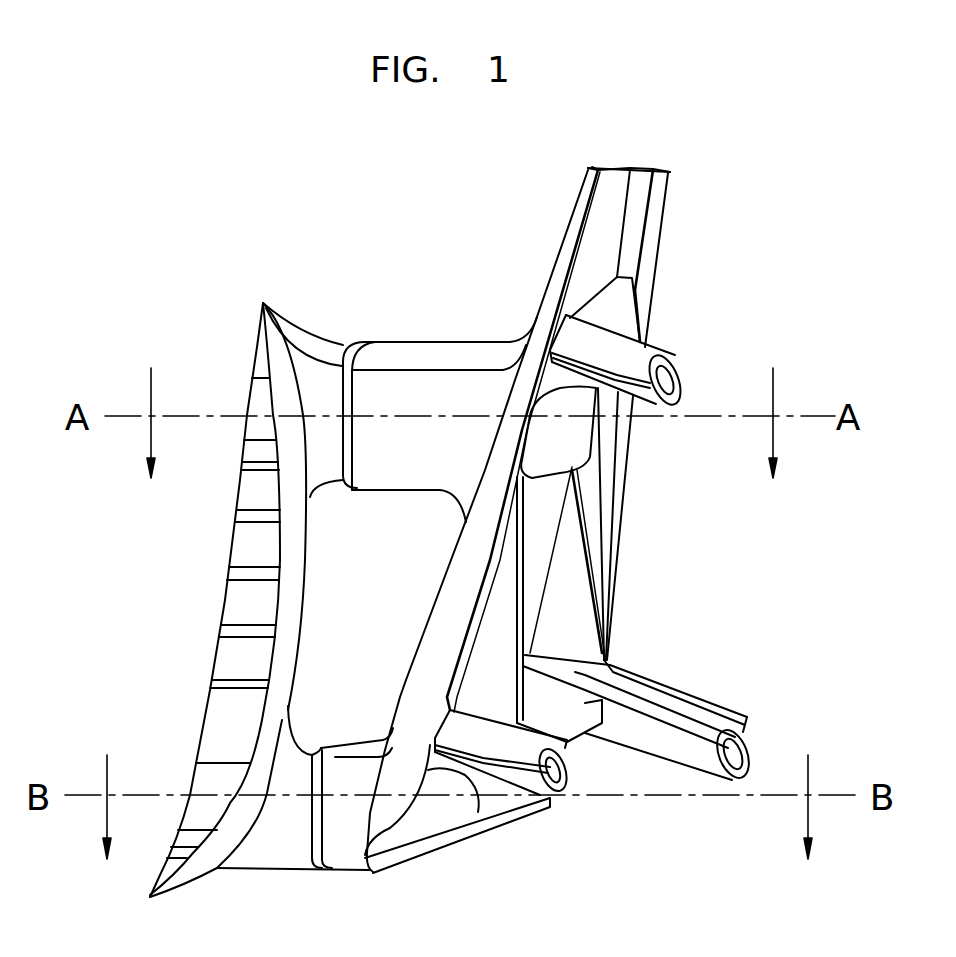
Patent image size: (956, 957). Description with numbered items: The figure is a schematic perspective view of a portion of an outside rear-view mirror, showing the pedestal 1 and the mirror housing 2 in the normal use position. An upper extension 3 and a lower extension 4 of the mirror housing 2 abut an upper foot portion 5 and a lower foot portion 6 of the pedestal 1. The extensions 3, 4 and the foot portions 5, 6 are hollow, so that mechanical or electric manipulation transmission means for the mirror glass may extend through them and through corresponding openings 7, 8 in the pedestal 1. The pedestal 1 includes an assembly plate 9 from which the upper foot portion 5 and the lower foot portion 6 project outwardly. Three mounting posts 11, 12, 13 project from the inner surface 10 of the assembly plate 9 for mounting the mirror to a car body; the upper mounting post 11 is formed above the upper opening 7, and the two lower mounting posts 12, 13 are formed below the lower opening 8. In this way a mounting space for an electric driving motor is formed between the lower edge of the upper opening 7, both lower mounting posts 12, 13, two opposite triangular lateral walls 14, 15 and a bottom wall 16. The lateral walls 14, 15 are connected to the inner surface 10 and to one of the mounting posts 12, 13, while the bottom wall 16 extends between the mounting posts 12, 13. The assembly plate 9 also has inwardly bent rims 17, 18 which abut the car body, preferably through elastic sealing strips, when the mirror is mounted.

The pedestal 1 is at (578, 171).
The mirror housing 2 is at (259, 294).
The upper extension 3 is at (312, 332).
The lower extension 4 is at (265, 870).
The upper foot portion 5 is at (395, 340).
The lower foot portion 6 is at (348, 872).
The upper opening 7 is at (580, 438).
The lower opening 8 is at (448, 815).
The assembly plate 9 is at (558, 252).
The inner surface 10 is at (608, 190).
The upper mounting post 11 is at (648, 358).
The lower mounting post 12 is at (523, 783).
The lower mounting post 13 is at (693, 755).
The lateral wall 14 is at (572, 561).
The lateral wall 15 is at (495, 625).
The bottom wall 16 is at (570, 703).
The inwardly bent rim 17 is at (575, 215).
The inwardly bent rim 18 is at (640, 194).